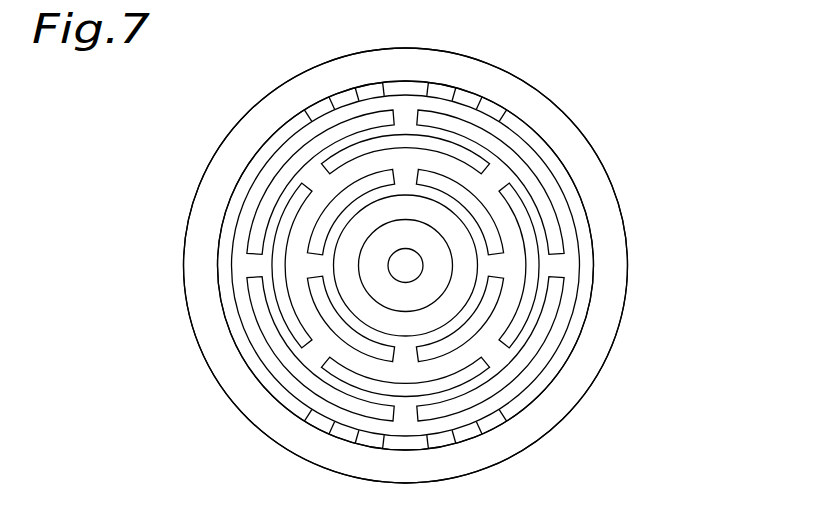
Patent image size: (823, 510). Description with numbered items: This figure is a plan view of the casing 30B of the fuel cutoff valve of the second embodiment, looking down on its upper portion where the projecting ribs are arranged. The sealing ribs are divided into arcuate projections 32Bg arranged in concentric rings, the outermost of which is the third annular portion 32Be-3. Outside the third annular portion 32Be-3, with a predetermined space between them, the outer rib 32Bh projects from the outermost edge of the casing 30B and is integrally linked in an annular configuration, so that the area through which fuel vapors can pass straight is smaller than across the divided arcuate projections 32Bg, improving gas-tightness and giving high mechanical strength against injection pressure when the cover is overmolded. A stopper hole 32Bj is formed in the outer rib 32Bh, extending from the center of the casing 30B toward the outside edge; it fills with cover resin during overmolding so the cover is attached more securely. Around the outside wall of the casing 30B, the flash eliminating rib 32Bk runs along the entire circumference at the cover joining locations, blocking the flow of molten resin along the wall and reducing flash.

The casing 30B is at (590, 148).
The flash eliminating rib 32Bk is at (608, 312).
The outer rib 32Bh is at (590, 267).
The stopper hole 32Bj is at (476, 433).
The arcuate projections 32Bg is at (470, 158).
The third annular portion 32Be-3 is at (503, 150).